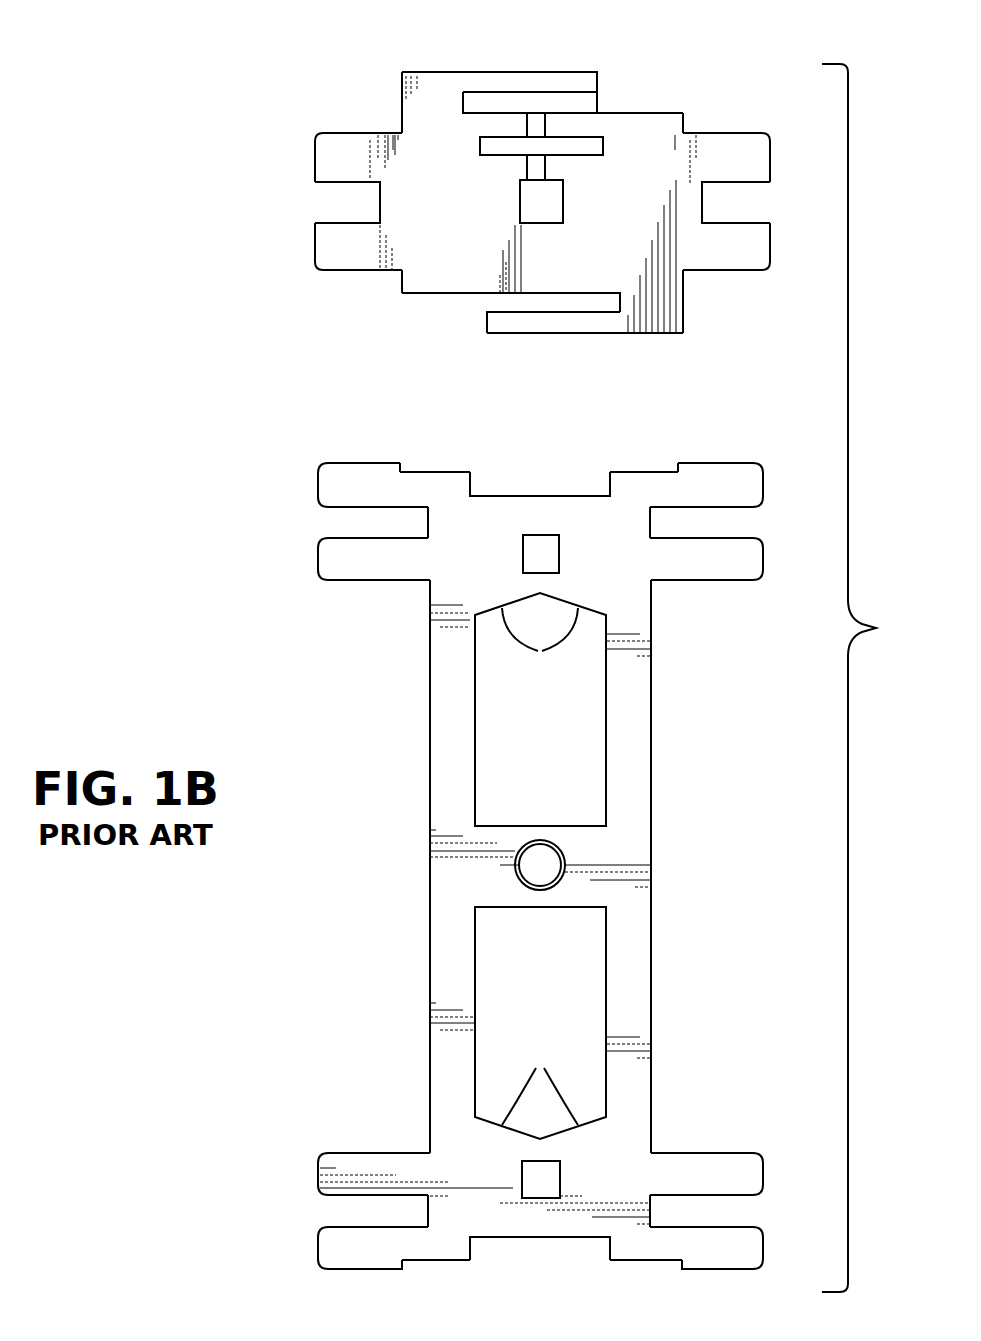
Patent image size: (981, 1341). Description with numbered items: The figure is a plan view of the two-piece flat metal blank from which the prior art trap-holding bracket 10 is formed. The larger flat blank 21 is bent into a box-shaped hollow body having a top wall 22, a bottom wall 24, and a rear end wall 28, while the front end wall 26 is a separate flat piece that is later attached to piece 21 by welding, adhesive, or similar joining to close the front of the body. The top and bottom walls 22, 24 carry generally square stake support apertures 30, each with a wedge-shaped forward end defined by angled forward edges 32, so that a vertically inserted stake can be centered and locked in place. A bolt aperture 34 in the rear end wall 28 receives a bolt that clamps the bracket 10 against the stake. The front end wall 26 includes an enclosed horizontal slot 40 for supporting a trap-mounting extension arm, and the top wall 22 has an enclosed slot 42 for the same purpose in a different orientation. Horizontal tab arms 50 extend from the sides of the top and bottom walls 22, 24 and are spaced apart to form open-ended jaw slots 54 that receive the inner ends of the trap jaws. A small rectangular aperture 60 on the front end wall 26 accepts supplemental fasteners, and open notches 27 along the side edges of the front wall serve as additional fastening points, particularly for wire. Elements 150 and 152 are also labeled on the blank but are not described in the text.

The trap-holding bracket 10 is at (876, 628).
The flat blank 21 is at (399, 982).
The top wall 22 is at (480, 527).
The bottom wall 24 is at (460, 1168).
The front end wall 26 is at (660, 96).
The open notches 27 is at (347, 193).
The rear end wall 28 is at (615, 848).
The stake support apertures 30 is at (607, 745).
The angled forward edges 32 is at (540, 866).
The bolt aperture 34 is at (538, 870).
The enclosed horizontal slot 40 is at (515, 148).
The enclosed slot 42 is at (565, 492).
The horizontal tab arms 50 is at (363, 562).
The jaw slots 54 is at (408, 524).
The small rectangular aperture 60 is at (541, 203).
The outer bar 150 is at (485, 80).
The inner bar 152 is at (577, 103).